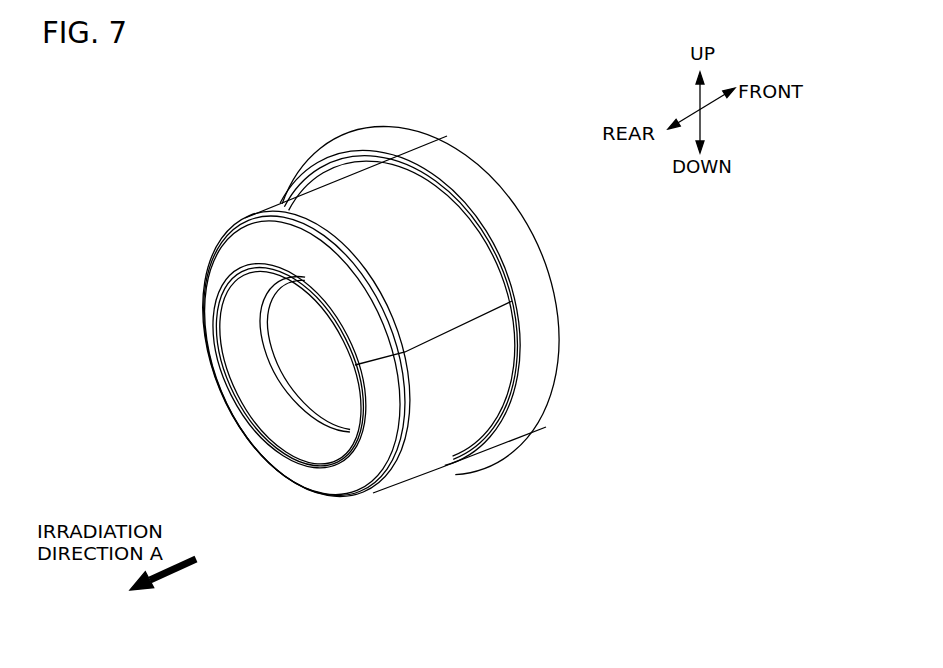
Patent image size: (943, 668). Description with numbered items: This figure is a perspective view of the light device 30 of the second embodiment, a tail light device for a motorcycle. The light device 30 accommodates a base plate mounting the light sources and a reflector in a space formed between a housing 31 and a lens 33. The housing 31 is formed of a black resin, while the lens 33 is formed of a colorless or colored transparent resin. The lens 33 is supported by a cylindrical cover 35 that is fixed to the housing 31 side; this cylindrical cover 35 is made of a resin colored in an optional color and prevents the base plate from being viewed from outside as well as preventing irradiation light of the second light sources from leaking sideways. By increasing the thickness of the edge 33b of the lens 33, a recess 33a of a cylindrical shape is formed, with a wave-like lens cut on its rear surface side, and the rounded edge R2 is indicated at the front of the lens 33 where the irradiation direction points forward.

The light device 30 is at (180, 176).
The housing 31 is at (493, 195).
The lens 33 is at (197, 305).
The recess 33a is at (308, 372).
The edge 33b is at (222, 264).
The cylindrical cover 35 is at (345, 205).
The rounded corner R2 is at (212, 353).